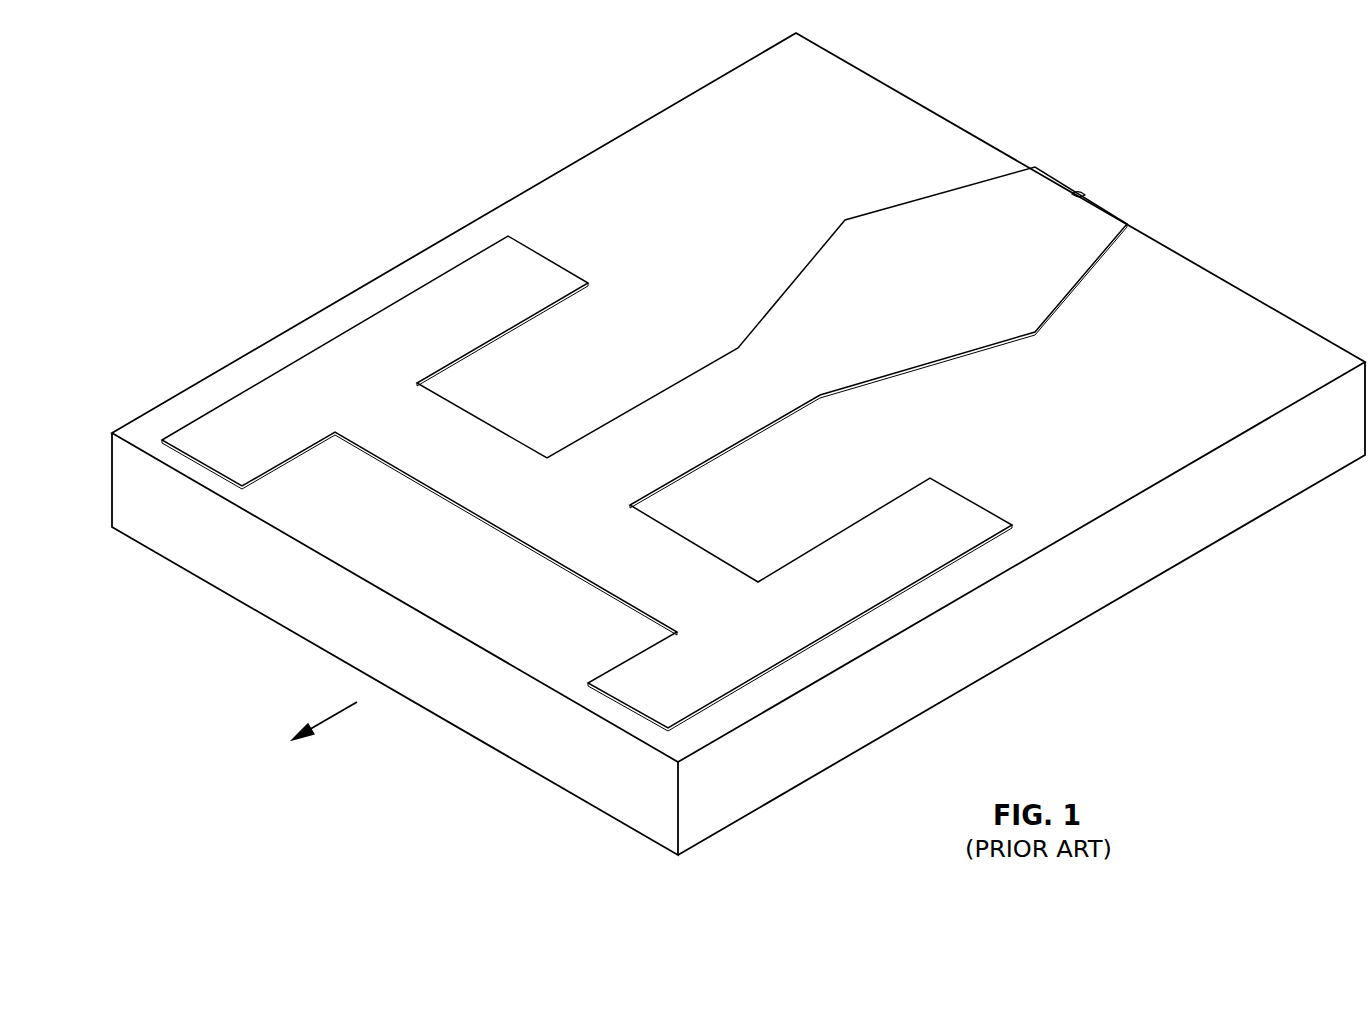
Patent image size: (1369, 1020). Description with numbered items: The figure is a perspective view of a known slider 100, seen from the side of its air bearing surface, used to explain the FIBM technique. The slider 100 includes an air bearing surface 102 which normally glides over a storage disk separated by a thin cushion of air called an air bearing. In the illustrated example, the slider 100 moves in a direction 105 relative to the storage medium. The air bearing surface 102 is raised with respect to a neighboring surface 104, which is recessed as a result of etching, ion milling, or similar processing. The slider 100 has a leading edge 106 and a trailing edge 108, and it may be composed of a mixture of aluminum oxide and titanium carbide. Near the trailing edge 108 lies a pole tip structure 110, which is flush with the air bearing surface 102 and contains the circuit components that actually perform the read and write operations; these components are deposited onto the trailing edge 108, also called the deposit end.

The slider 100 is at (738, 444).
The air bearing surface 102 is at (333, 362).
The neighboring surface 104 is at (590, 183).
The direction 105 is at (340, 713).
The leading edge 106 is at (525, 745).
The trailing edge 108 is at (1213, 270).
The pole tip structure 110 is at (1092, 187).